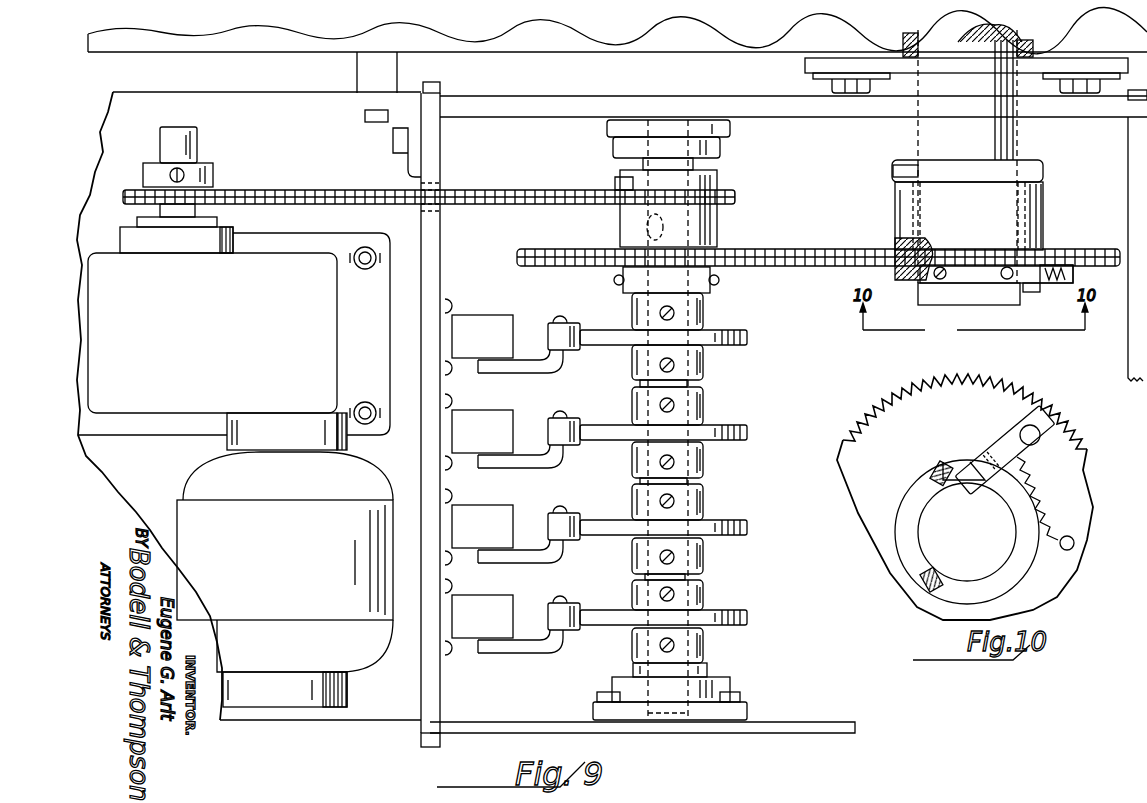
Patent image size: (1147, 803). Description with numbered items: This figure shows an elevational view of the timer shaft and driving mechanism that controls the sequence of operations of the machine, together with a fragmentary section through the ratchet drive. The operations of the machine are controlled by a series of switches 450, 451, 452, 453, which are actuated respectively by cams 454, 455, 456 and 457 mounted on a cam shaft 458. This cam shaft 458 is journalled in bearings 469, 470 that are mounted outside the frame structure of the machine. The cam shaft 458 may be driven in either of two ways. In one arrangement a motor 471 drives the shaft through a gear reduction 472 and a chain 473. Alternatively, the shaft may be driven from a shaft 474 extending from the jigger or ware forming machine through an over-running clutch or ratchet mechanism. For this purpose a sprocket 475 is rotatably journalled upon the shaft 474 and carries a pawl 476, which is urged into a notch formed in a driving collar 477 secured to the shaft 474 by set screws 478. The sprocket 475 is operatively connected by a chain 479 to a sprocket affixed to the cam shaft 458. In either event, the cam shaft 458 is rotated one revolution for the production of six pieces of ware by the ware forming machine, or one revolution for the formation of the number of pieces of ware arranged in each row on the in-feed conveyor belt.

In FIG. 9, the switch 450 is at (479, 337).
In FIG. 9, the switch 451 is at (479, 432).
In FIG. 9, the switch 452 is at (479, 527).
In FIG. 9, the switch 453 is at (479, 617).
In FIG. 9, the cam 454 is at (748, 340).
In FIG. 9, the cam 455 is at (745, 442).
In FIG. 9, the cam 456 is at (747, 537).
In FIG. 9, the cam 457 is at (747, 628).
In FIG. 9, the cam shaft 458 is at (645, 576).
In FIG. 9, the bearing 469 is at (731, 128).
In FIG. 9, the bearing 470 is at (747, 716).
In FIG. 9, the motor 471 is at (285, 560).
In FIG. 9, the gear reduction 472 is at (212, 333).
In FIG. 9, the chain 473 is at (306, 193).
In FIG. 9, the shaft 474 is at (968, 153).
In FIG. 10, the shaft 474 is at (967, 532).
In FIG. 9, the sprocket 475 is at (893, 280).
In FIG. 10, the sprocket 475 is at (965, 497).
In FIG. 9, the pawl 476 is at (1025, 292).
In FIG. 10, the pawl 476 is at (1025, 432).
In FIG. 9, the driving collar 477 is at (967, 205).
In FIG. 10, the driving collar 477 is at (967, 532).
In FIG. 10, the set screws 478 is at (962, 445).
In FIG. 9, the chain 479 is at (792, 258).